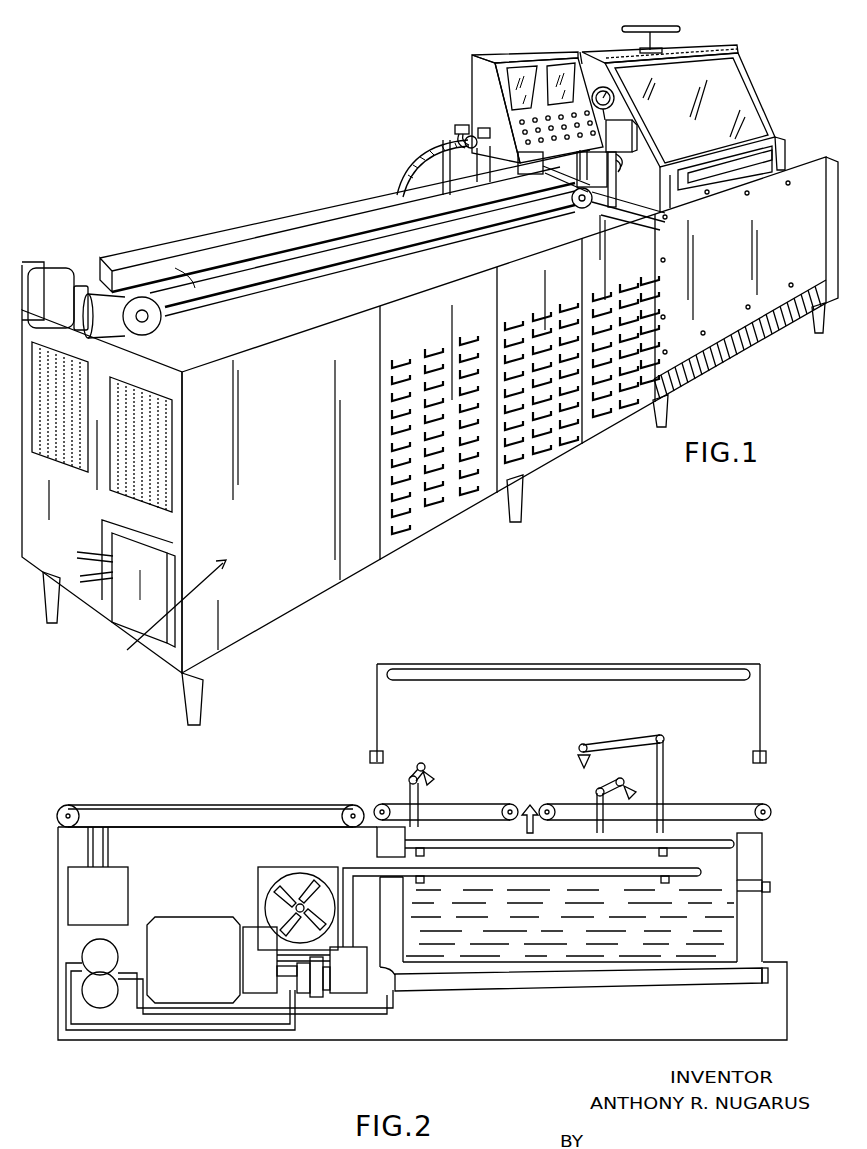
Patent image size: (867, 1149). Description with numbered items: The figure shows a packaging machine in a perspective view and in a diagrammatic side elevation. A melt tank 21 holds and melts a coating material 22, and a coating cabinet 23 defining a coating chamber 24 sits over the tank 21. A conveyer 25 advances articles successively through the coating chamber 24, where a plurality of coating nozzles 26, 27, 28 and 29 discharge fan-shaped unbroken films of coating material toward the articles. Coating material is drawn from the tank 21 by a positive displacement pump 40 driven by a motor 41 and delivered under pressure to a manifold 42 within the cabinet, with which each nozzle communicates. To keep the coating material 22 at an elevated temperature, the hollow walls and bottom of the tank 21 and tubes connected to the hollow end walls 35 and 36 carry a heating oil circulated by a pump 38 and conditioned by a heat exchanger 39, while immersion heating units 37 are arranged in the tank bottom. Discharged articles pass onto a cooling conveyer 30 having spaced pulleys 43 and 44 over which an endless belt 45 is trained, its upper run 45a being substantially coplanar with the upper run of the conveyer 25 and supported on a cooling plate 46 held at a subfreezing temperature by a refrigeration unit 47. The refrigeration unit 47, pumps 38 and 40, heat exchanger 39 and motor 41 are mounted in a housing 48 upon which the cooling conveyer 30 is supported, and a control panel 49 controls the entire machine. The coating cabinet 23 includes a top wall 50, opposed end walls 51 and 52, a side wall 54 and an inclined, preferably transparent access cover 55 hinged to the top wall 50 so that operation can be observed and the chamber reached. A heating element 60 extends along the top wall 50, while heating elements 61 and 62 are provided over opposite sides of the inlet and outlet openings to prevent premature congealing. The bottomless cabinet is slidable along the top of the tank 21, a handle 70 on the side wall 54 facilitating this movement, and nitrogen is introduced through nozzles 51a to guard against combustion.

In FIG. 1, the melt tank 21 is at (795, 258).
In FIG. 2, the melt tank 21 is at (773, 935).
In FIG. 2, the coating material 22 is at (557, 938).
In FIG. 1, the coating cabinet 23 is at (722, 44).
In FIG. 2, the coating cabinet 23 is at (746, 660).
In FIG. 2, the coating chamber 24 is at (614, 695).
In FIG. 2, the conveyer 25 is at (748, 802).
In FIG. 2, the coating nozzle 26 is at (634, 791).
In FIG. 2, the coating nozzle 27 is at (596, 752).
In FIG. 2, the coating nozzle 28 is at (432, 782).
In FIG. 2, the coating nozzle 29 is at (532, 802).
In FIG. 1, the cooling conveyer 30 is at (357, 213).
In FIG. 2, the cooling conveyer 30 is at (304, 802).
In FIG. 2, the end wall 35 is at (383, 843).
In FIG. 2, the end wall 36 is at (766, 860).
In FIG. 2, the immersion heating units 37 is at (572, 985).
In FIG. 2, the pump 38 is at (84, 957).
In FIG. 2, the heat exchanger 39 is at (257, 889).
In FIG. 2, the positive displacement pump 40 is at (350, 985).
In FIG. 2, the motor 41 is at (209, 990).
In FIG. 2, the manifold 42 is at (565, 850).
In FIG. 1, the pulley 43 is at (586, 207).
In FIG. 1, the pulley 44 is at (148, 332).
In FIG. 1, the belt 45 is at (205, 270).
In FIG. 1, the upper run 45a is at (255, 242).
In FIG. 1, the cooling plate 46 is at (446, 240).
In FIG. 2, the cooling plate 46 is at (235, 803).
In FIG. 2, the refrigeration unit 47 is at (132, 878).
In FIG. 1, the housing 48 is at (148, 612).
In FIG. 1, the control panel 49 is at (535, 70).
In FIG. 2, the top wall 50 is at (463, 664).
In FIG. 2, the end wall 51 is at (763, 697).
In FIG. 2, the nozzles 51a is at (772, 888).
In FIG. 2, the end wall 52 is at (378, 703).
In FIG. 1, the side wall 54 is at (688, 196).
In FIG. 1, the access cover 55 is at (727, 103).
In FIG. 2, the heating element 60 is at (567, 672).
In FIG. 2, the heating elements 61 is at (756, 752).
In FIG. 2, the heating elements 62 is at (371, 752).
In FIG. 1, the handle 70 is at (785, 134).